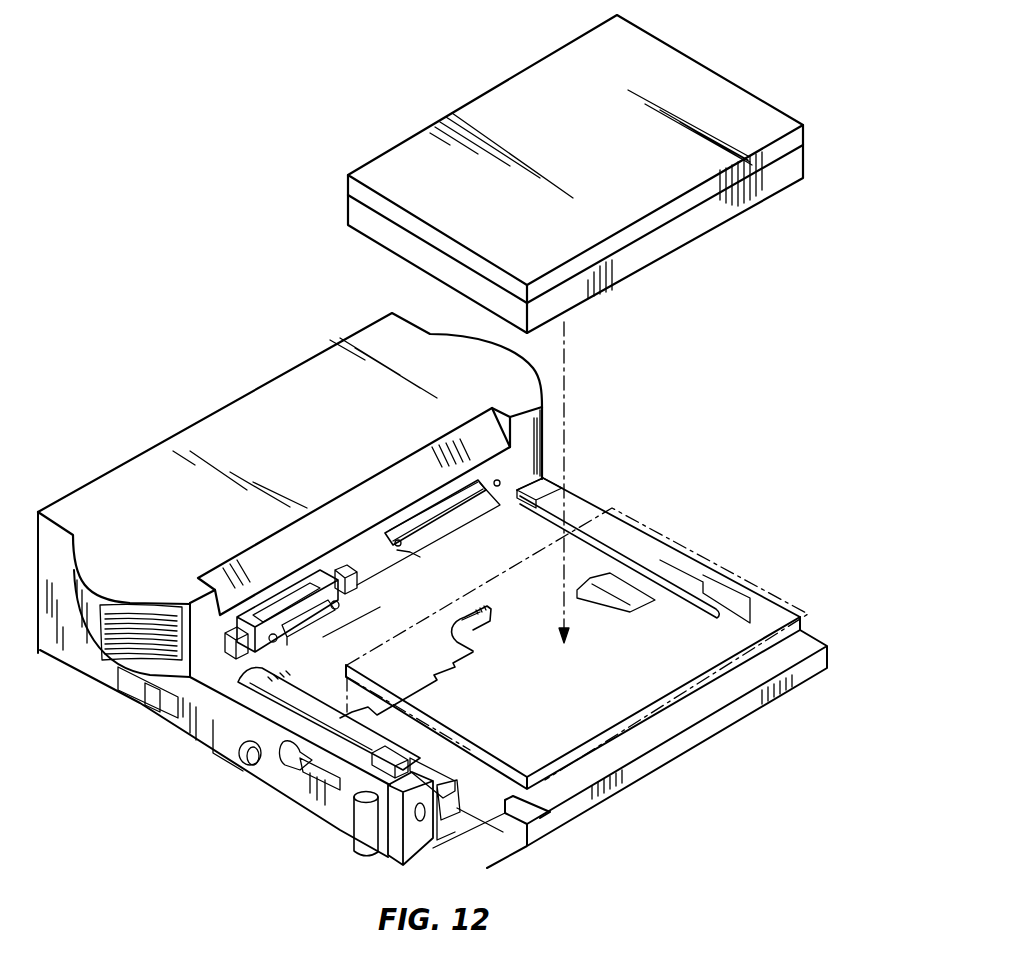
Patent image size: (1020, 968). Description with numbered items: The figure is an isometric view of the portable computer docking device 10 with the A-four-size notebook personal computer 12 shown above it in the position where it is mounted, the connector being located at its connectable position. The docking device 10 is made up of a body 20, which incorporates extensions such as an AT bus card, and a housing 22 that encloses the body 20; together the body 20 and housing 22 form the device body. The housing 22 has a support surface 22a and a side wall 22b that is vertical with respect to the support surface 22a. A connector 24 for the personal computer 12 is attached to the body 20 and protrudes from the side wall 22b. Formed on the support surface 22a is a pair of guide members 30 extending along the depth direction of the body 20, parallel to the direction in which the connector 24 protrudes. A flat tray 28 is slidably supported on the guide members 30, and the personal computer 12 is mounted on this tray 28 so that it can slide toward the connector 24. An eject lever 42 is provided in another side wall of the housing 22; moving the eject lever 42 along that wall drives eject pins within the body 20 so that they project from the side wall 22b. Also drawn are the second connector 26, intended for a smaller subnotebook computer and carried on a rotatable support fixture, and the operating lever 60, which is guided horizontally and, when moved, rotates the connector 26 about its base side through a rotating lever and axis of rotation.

The portable computer docking device 10 is at (150, 420).
The A4-size notebook personal computer 12 is at (714, 73).
The body 20 is at (230, 770).
The housing 22 is at (318, 373).
The support surface 22a is at (537, 530).
The side wall 22b is at (542, 433).
The connector 24 is at (445, 513).
The connector 26 is at (283, 610).
The flat tray 28 is at (583, 800).
The guide members 30 is at (660, 565).
The eject lever 42 is at (297, 767).
The operating lever 60 is at (147, 703).